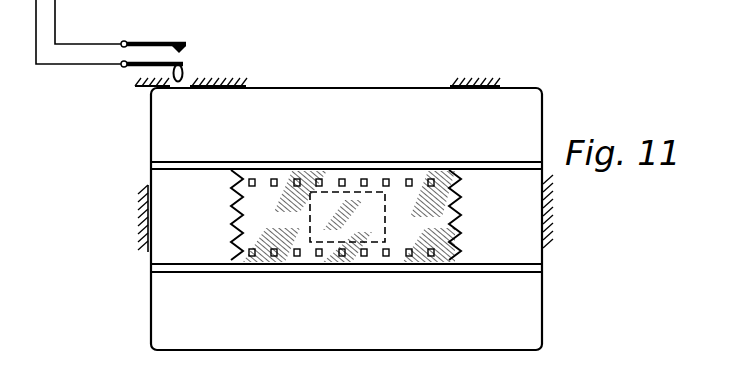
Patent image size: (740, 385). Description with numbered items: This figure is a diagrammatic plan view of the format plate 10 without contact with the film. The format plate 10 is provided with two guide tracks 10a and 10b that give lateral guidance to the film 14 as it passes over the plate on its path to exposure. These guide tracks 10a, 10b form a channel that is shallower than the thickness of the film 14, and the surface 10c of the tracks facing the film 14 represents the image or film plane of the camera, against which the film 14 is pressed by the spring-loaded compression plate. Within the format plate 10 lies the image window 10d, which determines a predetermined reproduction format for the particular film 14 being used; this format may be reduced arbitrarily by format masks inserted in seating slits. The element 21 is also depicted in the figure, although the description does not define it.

The format plate 10 is at (520, 303).
The guide track 10a is at (176, 268).
The guide track 10b is at (167, 163).
The surface of guide tracks 10c is at (426, 108).
The image window 10d is at (353, 190).
The film 14 is at (262, 217).
The electrodes with lead wires 21 is at (190, 50).